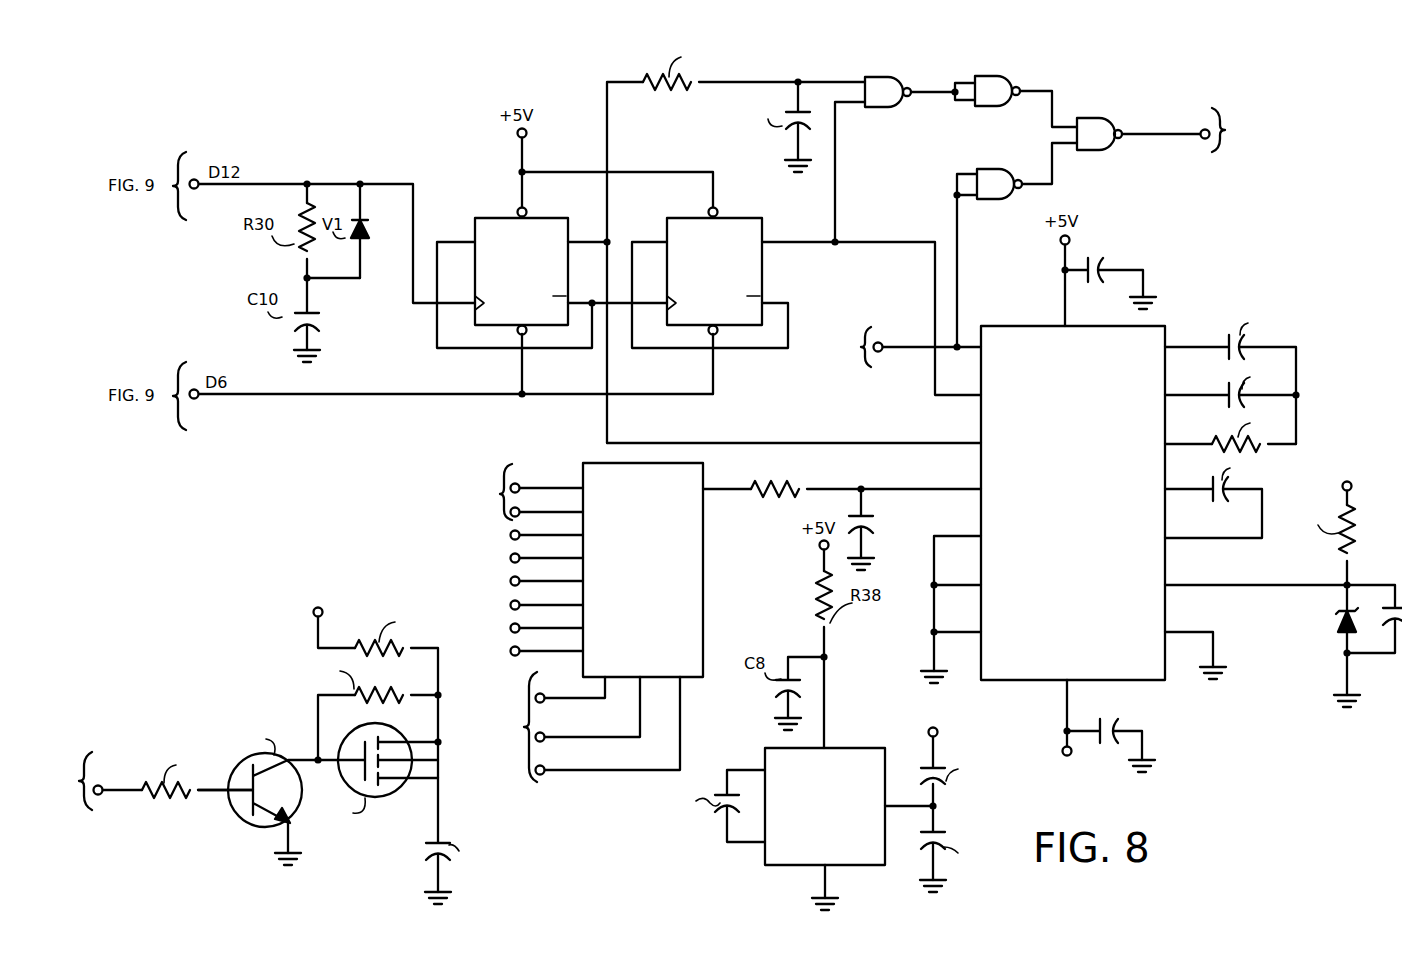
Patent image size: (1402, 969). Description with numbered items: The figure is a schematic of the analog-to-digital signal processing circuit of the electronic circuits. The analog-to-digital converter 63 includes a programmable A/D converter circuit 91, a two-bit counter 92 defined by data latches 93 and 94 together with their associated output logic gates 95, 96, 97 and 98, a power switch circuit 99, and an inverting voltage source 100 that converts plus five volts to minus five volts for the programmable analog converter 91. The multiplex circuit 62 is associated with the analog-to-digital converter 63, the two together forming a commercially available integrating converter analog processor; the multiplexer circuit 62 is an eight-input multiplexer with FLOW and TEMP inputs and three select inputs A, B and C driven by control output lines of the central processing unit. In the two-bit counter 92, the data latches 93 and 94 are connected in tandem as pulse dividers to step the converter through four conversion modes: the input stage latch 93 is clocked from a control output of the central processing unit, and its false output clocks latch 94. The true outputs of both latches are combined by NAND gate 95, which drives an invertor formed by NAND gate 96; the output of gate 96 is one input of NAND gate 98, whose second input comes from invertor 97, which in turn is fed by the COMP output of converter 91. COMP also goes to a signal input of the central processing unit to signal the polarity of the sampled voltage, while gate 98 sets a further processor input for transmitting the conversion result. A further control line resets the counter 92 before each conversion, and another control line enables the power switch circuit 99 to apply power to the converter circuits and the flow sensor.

The multiplexer circuit 62 is at (700, 466).
The analog-to-digital converter 63 is at (791, 530).
The programmable A/D converter circuit 91 is at (1013, 325).
The two-bit counter 92 is at (611, 66).
The data latch 93 is at (501, 217).
The data latch 94 is at (696, 217).
The NAND gate 95 is at (876, 77).
The NAND gate 96 is at (994, 75).
The invertor 97 is at (990, 169).
The NAND gate 98 is at (1100, 119).
The power switch circuit 99 is at (224, 724).
The inverting voltage source 100 is at (890, 707).